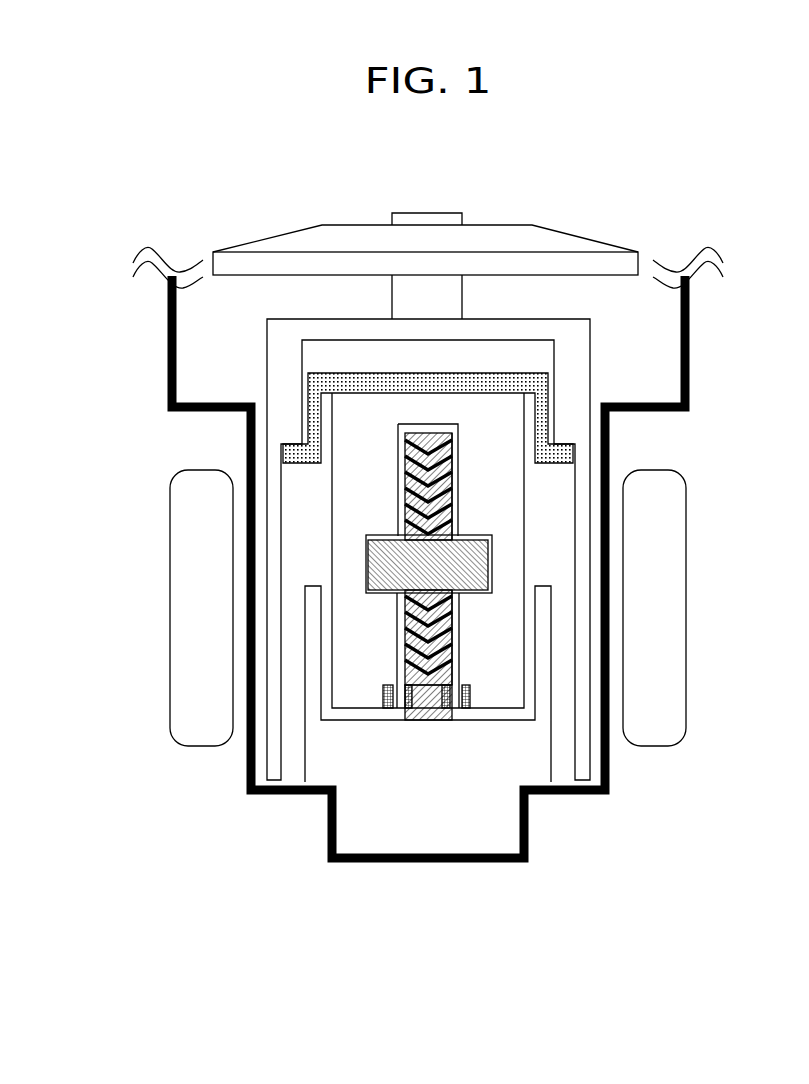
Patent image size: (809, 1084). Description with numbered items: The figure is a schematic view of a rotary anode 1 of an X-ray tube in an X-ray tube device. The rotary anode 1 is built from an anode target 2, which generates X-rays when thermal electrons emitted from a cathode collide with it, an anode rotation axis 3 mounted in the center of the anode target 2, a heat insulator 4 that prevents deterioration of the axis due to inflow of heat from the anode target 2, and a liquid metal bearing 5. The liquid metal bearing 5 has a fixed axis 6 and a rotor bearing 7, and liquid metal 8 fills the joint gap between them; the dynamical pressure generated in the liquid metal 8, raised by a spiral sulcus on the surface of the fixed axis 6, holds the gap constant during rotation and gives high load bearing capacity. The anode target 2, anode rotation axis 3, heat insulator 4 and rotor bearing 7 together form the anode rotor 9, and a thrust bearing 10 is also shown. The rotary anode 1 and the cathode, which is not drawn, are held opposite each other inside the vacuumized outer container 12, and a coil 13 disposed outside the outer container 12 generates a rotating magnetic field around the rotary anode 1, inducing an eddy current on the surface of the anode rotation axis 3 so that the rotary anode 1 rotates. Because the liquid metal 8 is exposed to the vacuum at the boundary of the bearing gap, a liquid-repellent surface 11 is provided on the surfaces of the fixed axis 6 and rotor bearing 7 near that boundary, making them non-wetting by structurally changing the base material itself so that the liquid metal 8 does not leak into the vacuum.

The rotary anode 1 is at (267, 237).
The anode target 2 is at (572, 237).
The anode rotation axis 3 is at (462, 300).
The heat insulator 4 is at (530, 372).
The liquid metal bearing 5 is at (332, 487).
The fixed axis 6 is at (437, 722).
The rotor bearing 7 is at (523, 563).
The liquid metal 8 is at (460, 426).
The anode rotor 9 is at (450, 487).
The thrust bearing 10 is at (368, 565).
The liquid-repellent surface 11 is at (467, 683).
The outer container 12 is at (167, 346).
The coil 13 is at (686, 697).